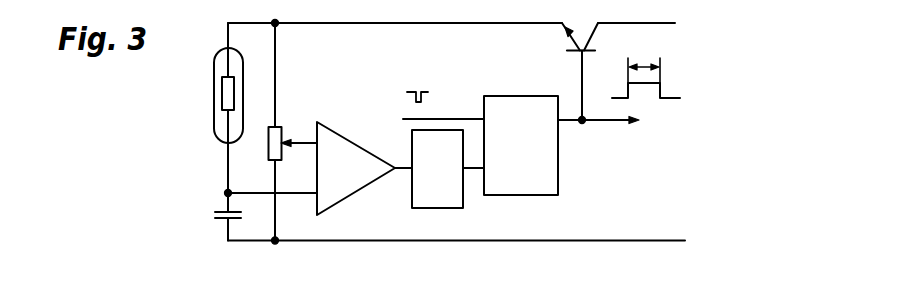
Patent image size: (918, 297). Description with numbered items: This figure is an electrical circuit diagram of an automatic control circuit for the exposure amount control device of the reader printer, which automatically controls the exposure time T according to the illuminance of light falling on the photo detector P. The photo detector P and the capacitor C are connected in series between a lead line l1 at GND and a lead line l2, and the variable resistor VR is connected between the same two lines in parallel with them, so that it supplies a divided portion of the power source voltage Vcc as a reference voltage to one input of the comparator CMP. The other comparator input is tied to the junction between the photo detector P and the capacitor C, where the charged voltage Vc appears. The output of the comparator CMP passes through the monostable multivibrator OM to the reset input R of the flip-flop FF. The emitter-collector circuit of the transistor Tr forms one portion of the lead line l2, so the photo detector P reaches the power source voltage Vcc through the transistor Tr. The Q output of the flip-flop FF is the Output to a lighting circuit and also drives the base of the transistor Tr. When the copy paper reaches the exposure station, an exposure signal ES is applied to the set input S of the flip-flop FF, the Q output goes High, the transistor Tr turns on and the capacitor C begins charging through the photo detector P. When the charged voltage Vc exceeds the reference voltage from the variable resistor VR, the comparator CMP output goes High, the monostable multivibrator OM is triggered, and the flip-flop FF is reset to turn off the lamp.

The photo detector P is at (215, 108).
The variable resistor VR is at (293, 131).
The charged voltage Vc is at (248, 175).
The capacitor C is at (216, 217).
The comparator CMP is at (368, 182).
The monostable multivibrator OM is at (455, 182).
The exposure signal ES is at (423, 99).
The flip-flop FF is at (535, 163).
The transistor Tr is at (558, 71).
The power source voltage Vcc is at (707, 27).
The lead line l2 is at (658, 23).
The exposure time T is at (646, 68).
The output of the flip-flop Output is at (666, 136).
The ground GND is at (716, 243).
The lead line l1 is at (595, 242).